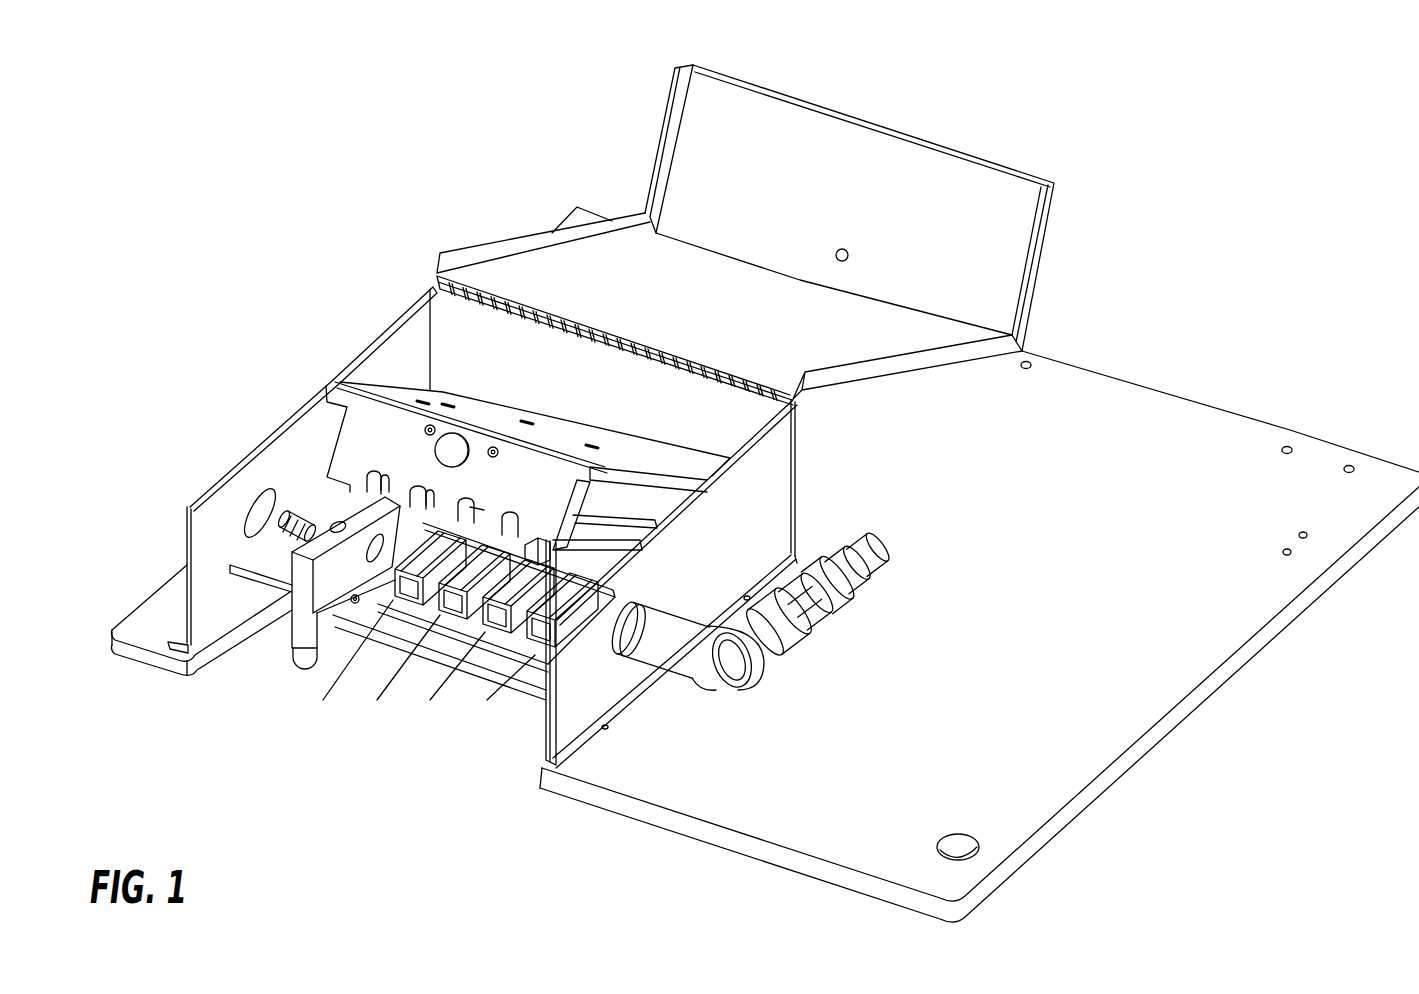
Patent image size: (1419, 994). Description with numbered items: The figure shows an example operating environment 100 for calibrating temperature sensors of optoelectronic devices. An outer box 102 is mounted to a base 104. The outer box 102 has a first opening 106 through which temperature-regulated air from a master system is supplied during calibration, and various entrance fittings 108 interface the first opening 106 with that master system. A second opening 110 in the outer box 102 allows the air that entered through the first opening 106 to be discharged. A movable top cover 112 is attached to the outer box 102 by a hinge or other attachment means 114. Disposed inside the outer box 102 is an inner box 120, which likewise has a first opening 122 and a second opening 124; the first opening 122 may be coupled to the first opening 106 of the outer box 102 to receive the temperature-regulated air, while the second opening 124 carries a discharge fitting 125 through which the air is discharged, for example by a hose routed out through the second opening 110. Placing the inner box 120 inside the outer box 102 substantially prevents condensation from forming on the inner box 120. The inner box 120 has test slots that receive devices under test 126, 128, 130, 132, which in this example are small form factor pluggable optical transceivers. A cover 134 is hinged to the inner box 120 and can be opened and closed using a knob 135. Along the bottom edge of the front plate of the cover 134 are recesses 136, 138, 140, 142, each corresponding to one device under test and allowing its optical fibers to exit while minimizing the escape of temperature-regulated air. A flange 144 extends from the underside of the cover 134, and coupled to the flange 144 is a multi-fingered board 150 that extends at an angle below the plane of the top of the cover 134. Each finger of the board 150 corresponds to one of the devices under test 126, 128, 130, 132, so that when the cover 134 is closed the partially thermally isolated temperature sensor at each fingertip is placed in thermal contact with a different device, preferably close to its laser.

The operating environment 100 is at (1177, 104).
The outer box 102 is at (383, 323).
The base 104 is at (1086, 495).
The first opening 106 is at (607, 647).
The entrance fittings 108 is at (810, 633).
The second opening 110 is at (248, 507).
The movable top cover 112 is at (875, 123).
The hinge 114 is at (800, 401).
The inner box 120 is at (307, 637).
The first opening 122 is at (600, 640).
The second opening 124 is at (293, 640).
The discharge fitting 125 is at (300, 510).
The DUT 126 is at (407, 595).
The DUT 128 is at (447, 608).
The DUT 130 is at (493, 617).
The DUT 132 is at (533, 630).
The cover 134 is at (480, 413).
The knob 135 is at (477, 503).
The recess 136 is at (373, 465).
The recess 138 is at (417, 480).
The recess 140 is at (532, 508).
The recess 142 is at (560, 480).
The flange 144 is at (652, 520).
The multi-fingered board 150 is at (625, 550).